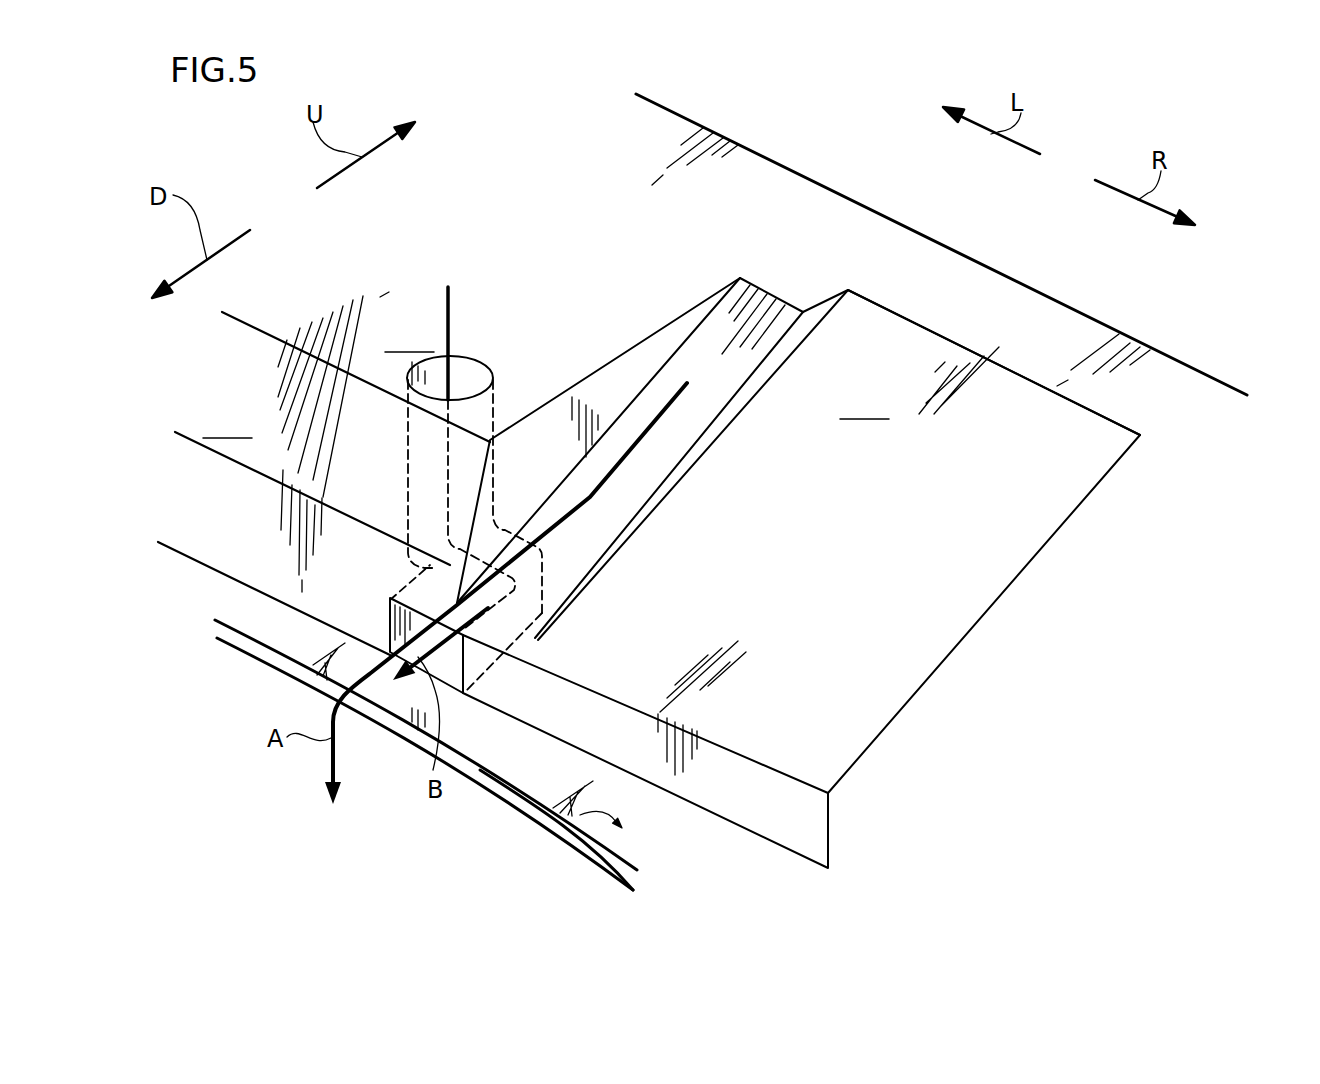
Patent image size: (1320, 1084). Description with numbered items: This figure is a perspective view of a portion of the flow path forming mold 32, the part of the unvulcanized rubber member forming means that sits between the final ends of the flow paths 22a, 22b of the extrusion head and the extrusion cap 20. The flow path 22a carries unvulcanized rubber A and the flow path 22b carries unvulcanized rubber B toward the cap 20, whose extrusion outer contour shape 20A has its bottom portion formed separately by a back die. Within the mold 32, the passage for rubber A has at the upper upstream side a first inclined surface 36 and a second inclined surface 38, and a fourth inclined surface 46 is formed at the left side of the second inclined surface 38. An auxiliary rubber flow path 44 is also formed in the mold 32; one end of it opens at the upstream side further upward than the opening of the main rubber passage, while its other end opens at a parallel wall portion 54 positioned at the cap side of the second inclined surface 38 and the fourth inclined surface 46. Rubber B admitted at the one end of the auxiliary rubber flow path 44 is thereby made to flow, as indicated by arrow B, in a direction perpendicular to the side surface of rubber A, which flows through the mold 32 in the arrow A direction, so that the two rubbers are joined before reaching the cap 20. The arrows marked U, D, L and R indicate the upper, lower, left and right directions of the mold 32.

The extrusion cap 20 is at (582, 805).
The extrusion outer contour shape 20A is at (517, 778).
The flow path 22a is at (984, 541).
The flow path 22b is at (324, 483).
The flow path forming mold 32 is at (1172, 349).
The first inclined surface 36 is at (914, 341).
The second inclined surface 38 is at (761, 312).
The auxiliary rubber flow path 44 is at (465, 353).
The fourth inclined surface 46 is at (338, 391).
The parallel wall portion 54 is at (735, 800).